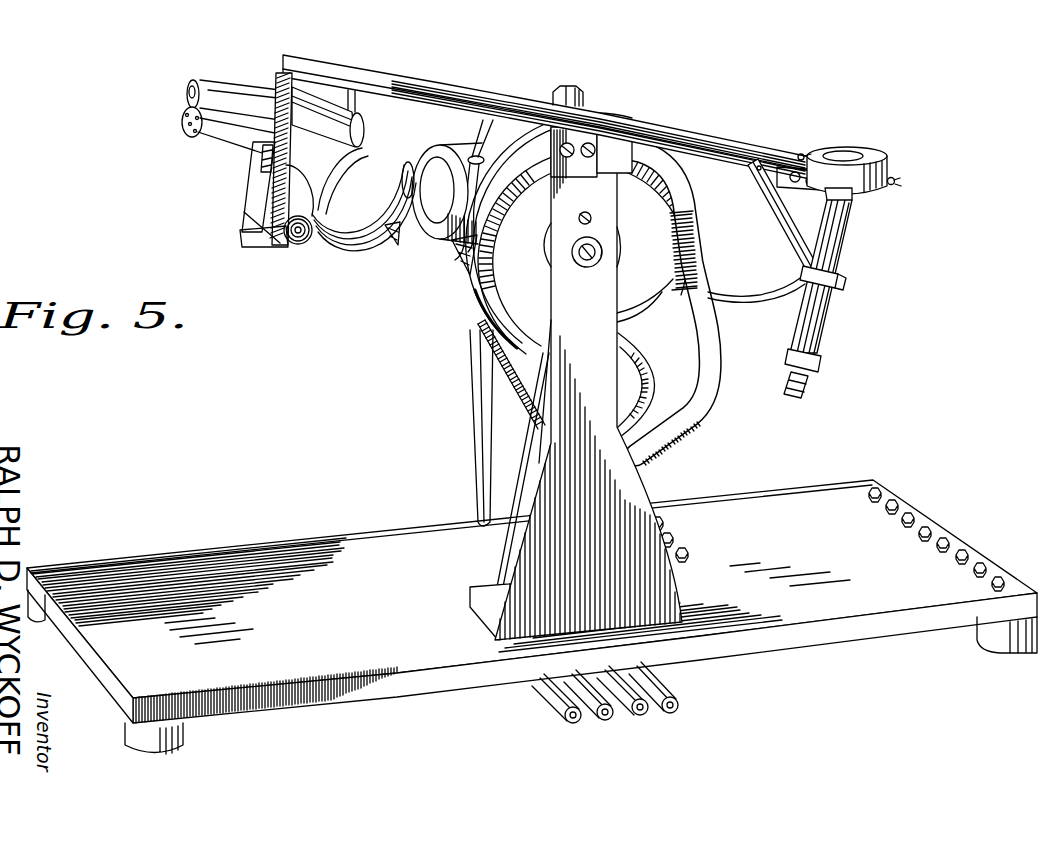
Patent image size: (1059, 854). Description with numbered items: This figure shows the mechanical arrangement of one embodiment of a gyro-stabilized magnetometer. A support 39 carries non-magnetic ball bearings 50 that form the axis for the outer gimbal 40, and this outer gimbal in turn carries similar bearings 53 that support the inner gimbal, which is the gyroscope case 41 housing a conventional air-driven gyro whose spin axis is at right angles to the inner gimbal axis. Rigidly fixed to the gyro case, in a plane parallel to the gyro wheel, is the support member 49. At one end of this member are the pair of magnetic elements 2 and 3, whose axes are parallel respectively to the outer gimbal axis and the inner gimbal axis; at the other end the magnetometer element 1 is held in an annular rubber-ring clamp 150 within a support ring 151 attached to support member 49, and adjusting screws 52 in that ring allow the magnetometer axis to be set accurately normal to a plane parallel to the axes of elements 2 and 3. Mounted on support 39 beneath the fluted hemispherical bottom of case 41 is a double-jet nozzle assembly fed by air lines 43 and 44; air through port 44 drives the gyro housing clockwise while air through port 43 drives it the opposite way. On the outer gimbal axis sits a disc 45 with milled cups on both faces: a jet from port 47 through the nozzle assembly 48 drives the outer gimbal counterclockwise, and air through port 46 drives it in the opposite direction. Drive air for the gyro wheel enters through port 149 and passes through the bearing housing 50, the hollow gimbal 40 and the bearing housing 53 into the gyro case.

The magnetometer element 1 is at (814, 327).
The magnetic element 2 is at (275, 205).
The magnetic element 3 is at (238, 86).
The support 39 is at (630, 483).
The outer gimbal 40 is at (429, 241).
The gyroscope case 41 is at (466, 254).
The air line 43 is at (605, 720).
The air line 44 is at (567, 720).
The disc 45 is at (490, 244).
The port 46 is at (507, 150).
The port 47 is at (668, 160).
The nozzle assembly 48 is at (616, 137).
The support member 49 is at (733, 162).
The non-magnetic ball bearing 50 is at (594, 262).
The adjusting screw 52 is at (800, 154).
The bearing 53 is at (412, 228).
The port 149 is at (497, 428).
The annular rubber-ring clamp 150 is at (834, 278).
The support ring 151 is at (868, 155).